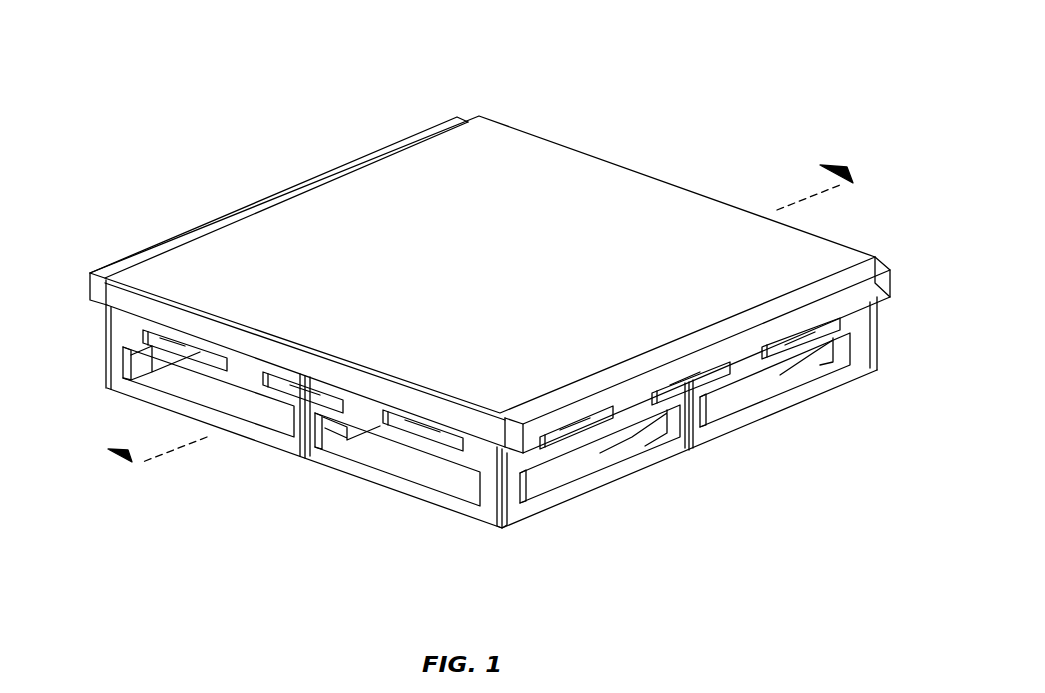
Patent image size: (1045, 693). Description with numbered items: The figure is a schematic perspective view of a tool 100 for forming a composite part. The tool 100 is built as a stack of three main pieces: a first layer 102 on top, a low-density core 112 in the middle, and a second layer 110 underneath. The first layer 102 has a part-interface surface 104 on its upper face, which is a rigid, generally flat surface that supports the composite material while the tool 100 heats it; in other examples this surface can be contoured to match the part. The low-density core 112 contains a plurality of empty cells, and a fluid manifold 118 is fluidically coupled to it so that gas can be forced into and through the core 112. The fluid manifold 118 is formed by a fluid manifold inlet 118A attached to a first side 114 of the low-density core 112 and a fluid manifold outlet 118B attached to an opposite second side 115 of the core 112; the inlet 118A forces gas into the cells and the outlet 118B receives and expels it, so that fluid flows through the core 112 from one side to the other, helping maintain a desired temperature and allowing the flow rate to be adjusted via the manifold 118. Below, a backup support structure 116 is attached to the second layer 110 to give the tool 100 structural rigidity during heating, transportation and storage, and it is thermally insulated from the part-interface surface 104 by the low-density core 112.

The tool 100 is at (686, 93).
The first layer 102 is at (800, 243).
The part-interface surface 104 is at (696, 216).
The second side 115 is at (348, 165).
The first side 114 is at (830, 277).
The fluid manifold 118 is at (881, 268).
The fluid manifold inlet 118A is at (880, 288).
The fluid manifold outlet 118B is at (98, 289).
The low-density core 112 is at (123, 297).
The second layer 110 is at (137, 317).
The backup support structure 116 is at (864, 336).